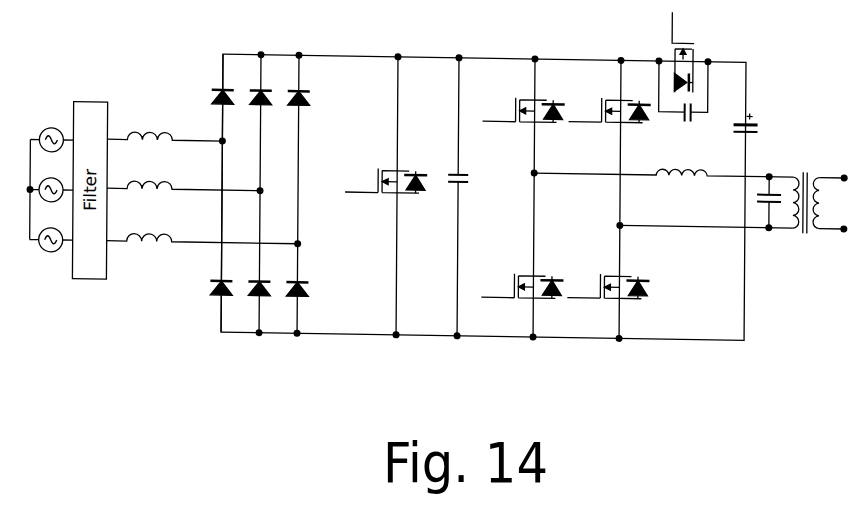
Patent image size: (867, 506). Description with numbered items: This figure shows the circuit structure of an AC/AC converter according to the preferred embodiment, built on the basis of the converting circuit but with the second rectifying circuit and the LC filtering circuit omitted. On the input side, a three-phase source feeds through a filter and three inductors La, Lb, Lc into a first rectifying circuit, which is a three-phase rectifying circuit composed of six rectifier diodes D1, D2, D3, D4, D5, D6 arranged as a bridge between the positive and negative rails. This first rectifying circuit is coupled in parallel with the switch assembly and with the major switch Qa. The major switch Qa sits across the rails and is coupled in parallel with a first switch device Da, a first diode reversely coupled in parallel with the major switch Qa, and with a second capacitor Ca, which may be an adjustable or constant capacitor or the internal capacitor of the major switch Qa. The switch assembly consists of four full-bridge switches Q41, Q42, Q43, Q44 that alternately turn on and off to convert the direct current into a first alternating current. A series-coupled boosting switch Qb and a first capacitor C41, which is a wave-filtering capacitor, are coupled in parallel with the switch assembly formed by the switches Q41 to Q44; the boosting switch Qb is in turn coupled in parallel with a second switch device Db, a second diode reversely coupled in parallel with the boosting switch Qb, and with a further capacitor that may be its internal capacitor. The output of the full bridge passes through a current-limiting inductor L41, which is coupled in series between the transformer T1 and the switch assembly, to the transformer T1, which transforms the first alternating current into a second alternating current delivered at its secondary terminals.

The input inductor (phase a) La is at (164, 127).
The input inductor (phase b) Lb is at (183, 178).
The input inductor (phase c) Lc is at (202, 230).
The rectifier diode D1 is at (216, 193).
The rectifier diode D2 is at (256, 88).
The rectifier diode D3 is at (294, 89).
The rectifier diode D4 is at (215, 283).
The rectifier diode D5 is at (254, 283).
The rectifier diode D6 is at (292, 284).
The major switch Qa is at (382, 181).
The first switch device Da is at (415, 174).
The second capacitor Ca is at (467, 170).
The full-bridge switch Q41 is at (524, 109).
The full-bridge switch Q42 is at (609, 110).
The full-bridge switch Q43 is at (519, 285).
The full-bridge switch Q44 is at (607, 287).
The boosting switch Qb is at (691, 52).
The second switch device Db is at (706, 83).
The first capacitor C41 is at (762, 120).
The current-limiting inductor L41 is at (663, 164).
The transformer T1 is at (819, 195).